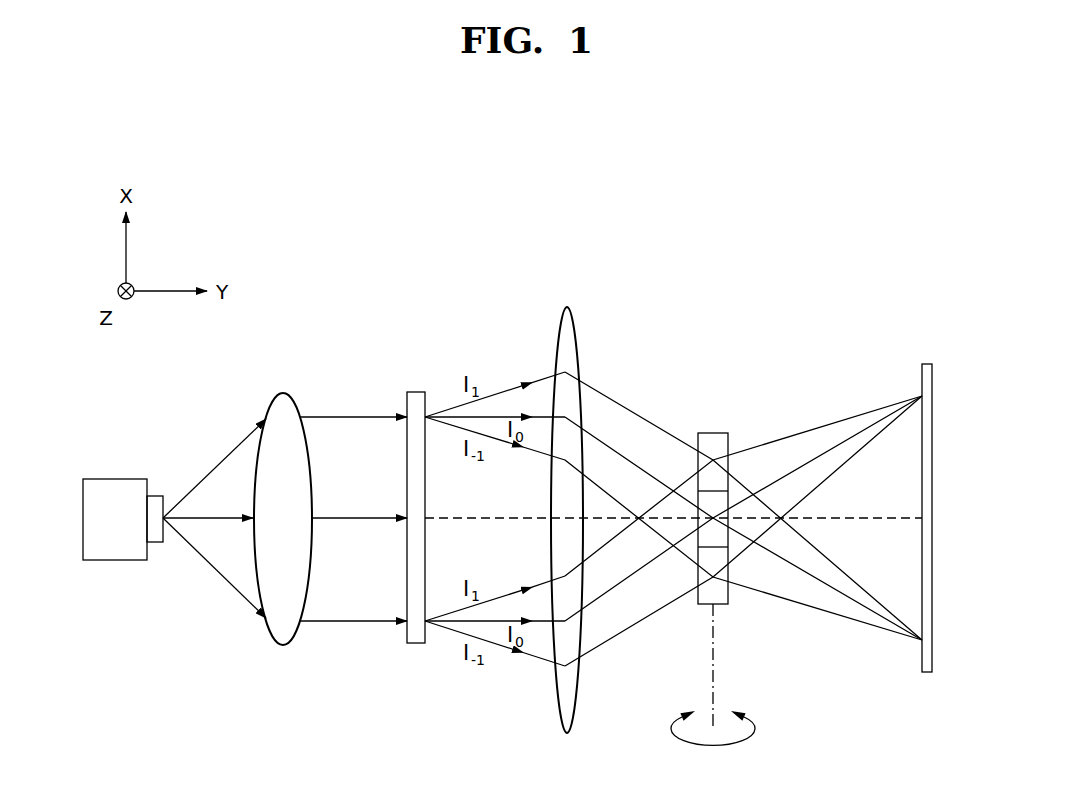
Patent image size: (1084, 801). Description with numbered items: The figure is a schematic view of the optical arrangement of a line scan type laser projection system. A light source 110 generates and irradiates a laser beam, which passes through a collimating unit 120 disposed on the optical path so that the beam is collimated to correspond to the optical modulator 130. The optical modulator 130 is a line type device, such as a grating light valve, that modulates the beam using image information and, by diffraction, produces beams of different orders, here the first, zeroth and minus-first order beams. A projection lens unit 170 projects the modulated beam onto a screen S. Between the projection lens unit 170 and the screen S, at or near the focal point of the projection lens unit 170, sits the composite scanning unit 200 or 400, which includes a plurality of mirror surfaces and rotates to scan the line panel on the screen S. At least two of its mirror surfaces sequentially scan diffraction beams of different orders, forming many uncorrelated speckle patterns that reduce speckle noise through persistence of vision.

The light source 110 is at (115, 479).
The collimating unit 120 is at (283, 393).
The optical modulator 130 is at (413, 392).
The projection lens unit 170 is at (565, 332).
The composite scanning unit 200 is at (702, 513).
The composite scanning unit 400 is at (710, 425).
The screen S is at (925, 363).